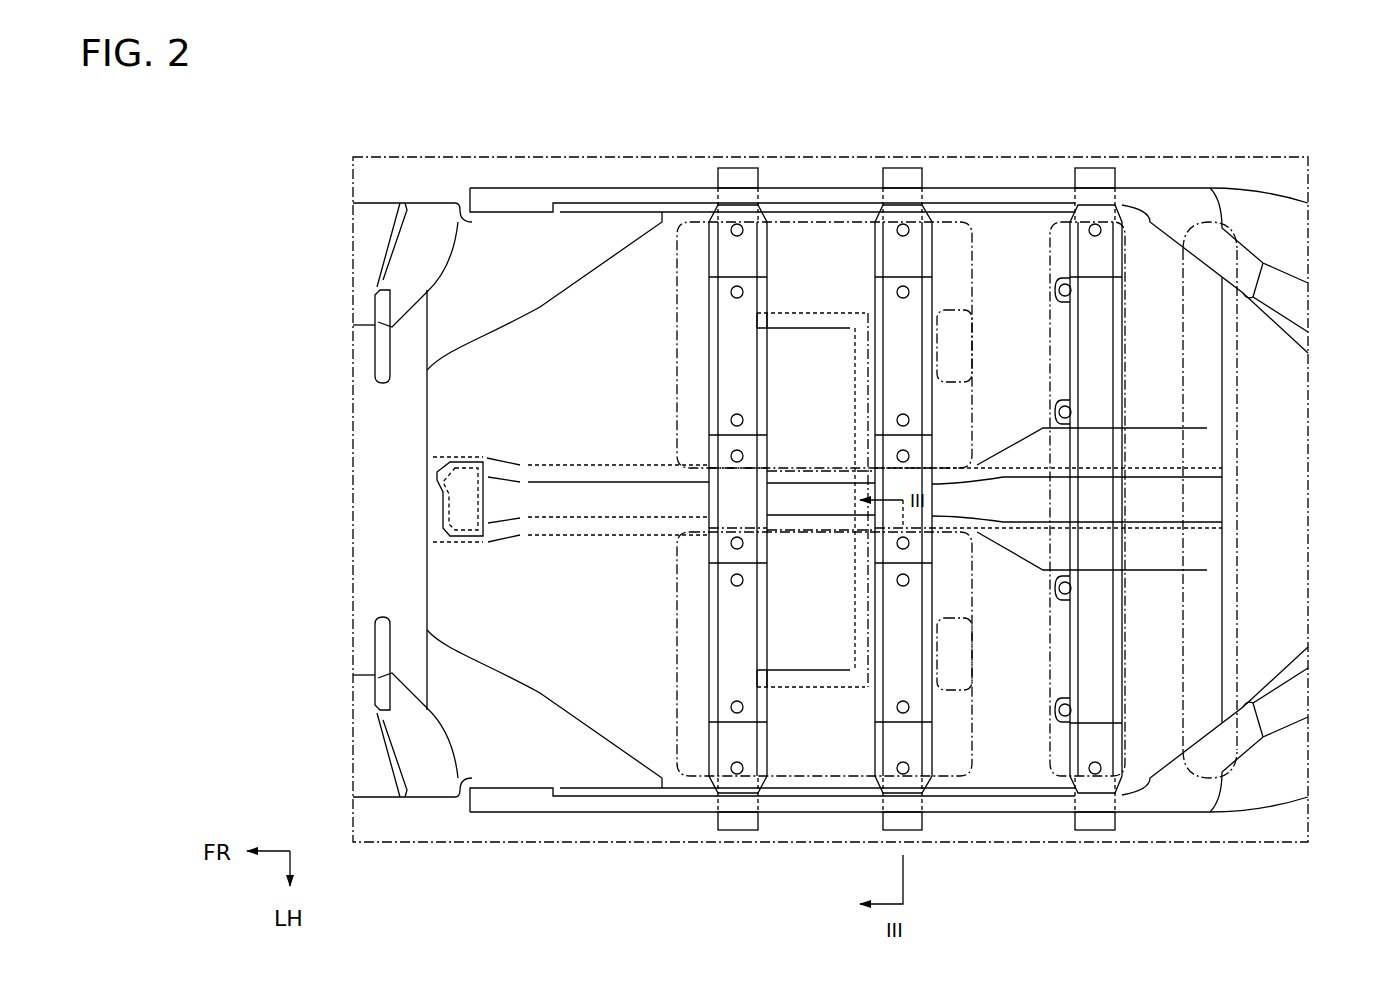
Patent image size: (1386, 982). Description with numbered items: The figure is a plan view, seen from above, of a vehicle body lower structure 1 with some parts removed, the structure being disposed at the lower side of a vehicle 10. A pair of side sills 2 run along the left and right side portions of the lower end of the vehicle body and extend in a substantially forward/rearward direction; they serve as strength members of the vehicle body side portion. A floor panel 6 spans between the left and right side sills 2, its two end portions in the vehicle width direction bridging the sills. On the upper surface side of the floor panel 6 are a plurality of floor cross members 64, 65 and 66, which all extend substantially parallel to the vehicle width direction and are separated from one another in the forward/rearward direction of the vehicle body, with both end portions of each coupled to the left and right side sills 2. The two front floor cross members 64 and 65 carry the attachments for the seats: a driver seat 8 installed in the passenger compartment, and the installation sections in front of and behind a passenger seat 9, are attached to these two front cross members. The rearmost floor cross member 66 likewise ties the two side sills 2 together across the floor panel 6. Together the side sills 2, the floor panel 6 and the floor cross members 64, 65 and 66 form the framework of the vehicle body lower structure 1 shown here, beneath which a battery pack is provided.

The vehicle 10 is at (580, 146).
The vehicle body lower structure 1 is at (800, 178).
The side sill 2 is at (985, 188).
The floor panel 6 is at (475, 403).
The driver seat 8 is at (677, 348).
The passenger seat 9 is at (677, 585).
The floor cross member 64 is at (706, 636).
The floor cross member 65 is at (868, 620).
The floor cross member 66 is at (1118, 602).